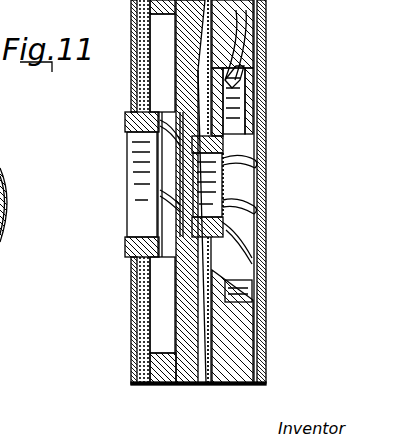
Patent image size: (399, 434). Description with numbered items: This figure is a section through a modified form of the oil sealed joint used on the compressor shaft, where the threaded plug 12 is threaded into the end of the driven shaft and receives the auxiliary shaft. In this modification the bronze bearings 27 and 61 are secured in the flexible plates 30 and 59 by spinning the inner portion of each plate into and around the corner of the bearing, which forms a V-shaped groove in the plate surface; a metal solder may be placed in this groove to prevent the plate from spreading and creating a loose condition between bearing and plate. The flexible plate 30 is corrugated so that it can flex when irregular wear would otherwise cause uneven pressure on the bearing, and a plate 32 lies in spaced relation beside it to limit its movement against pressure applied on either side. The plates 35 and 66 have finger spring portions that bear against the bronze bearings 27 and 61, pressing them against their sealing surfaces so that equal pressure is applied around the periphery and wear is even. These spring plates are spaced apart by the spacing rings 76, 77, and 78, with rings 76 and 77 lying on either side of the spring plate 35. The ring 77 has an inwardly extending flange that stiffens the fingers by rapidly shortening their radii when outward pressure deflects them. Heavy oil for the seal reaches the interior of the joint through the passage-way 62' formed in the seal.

The threaded plug 12 is at (0, 167).
The bronze bearing 27 is at (128, 256).
The flexible plate 30 is at (137, 330).
The plate 32 is at (138, 316).
The spring plate 35 is at (177, 385).
The flexible plate 59 is at (213, 376).
The bronze bearing 61 is at (243, 205).
The passage-way 62' is at (132, 176).
The spring plate 66 is at (263, 337).
The spacing ring 76 is at (162, 380).
The spacing ring 77 is at (196, 385).
The spacing ring 78 is at (264, 383).